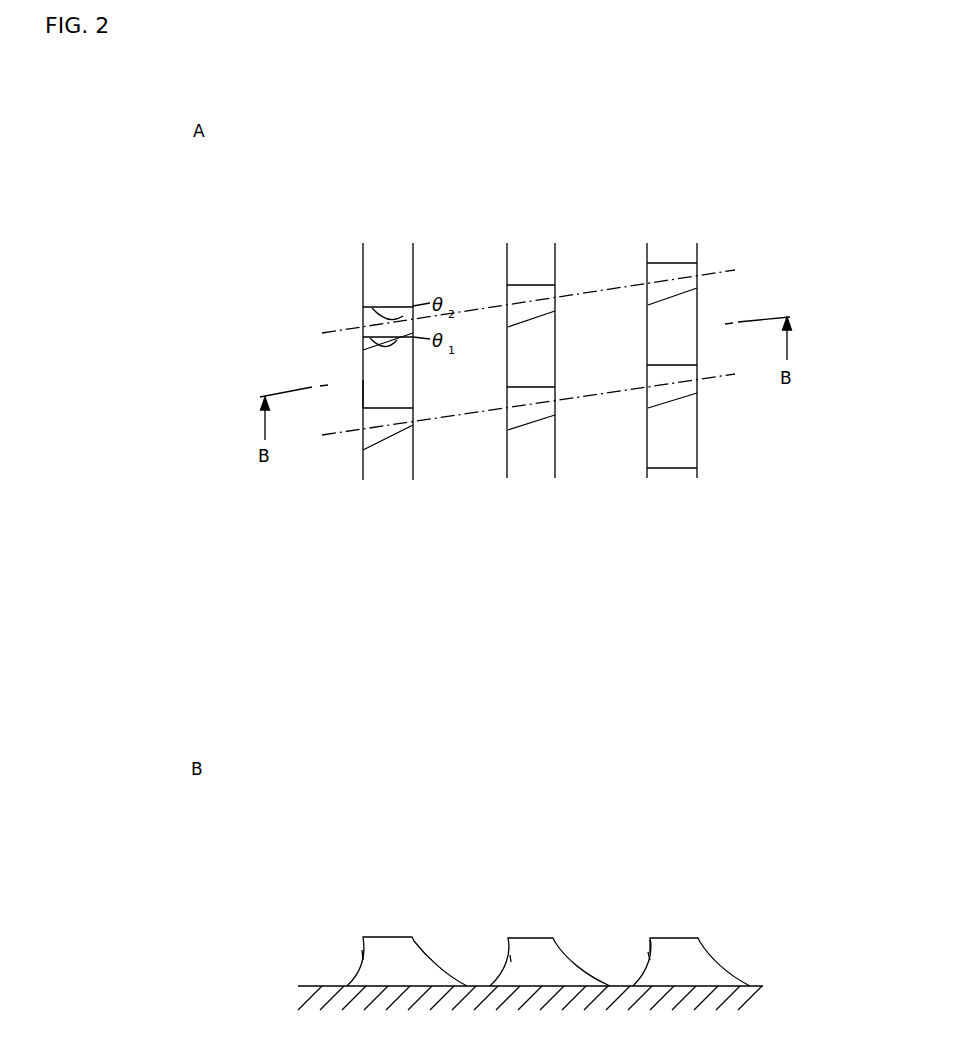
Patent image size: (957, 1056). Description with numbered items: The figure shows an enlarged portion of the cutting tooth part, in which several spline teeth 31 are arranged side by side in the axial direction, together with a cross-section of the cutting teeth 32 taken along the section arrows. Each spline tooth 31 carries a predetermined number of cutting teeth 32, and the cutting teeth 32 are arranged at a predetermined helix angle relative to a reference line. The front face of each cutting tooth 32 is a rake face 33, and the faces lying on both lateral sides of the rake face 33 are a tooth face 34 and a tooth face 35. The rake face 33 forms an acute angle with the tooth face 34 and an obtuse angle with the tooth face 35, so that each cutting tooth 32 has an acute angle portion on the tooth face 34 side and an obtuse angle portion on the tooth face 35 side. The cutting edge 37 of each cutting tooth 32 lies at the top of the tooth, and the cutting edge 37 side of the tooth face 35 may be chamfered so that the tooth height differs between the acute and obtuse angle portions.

In FIG. 2A, the spline tooth 31 is at (388, 243).
In FIG. 2A, the cutting tooth 32 is at (350, 323).
In FIG. 2B, the cutting tooth 32 is at (397, 935).
In FIG. 2B, the rake face 33 is at (362, 950).
In FIG. 2A, the tooth face 34 is at (388, 450).
In FIG. 2A, the tooth face 35 is at (388, 408).
In FIG. 2B, the cutting edge 37 is at (650, 952).